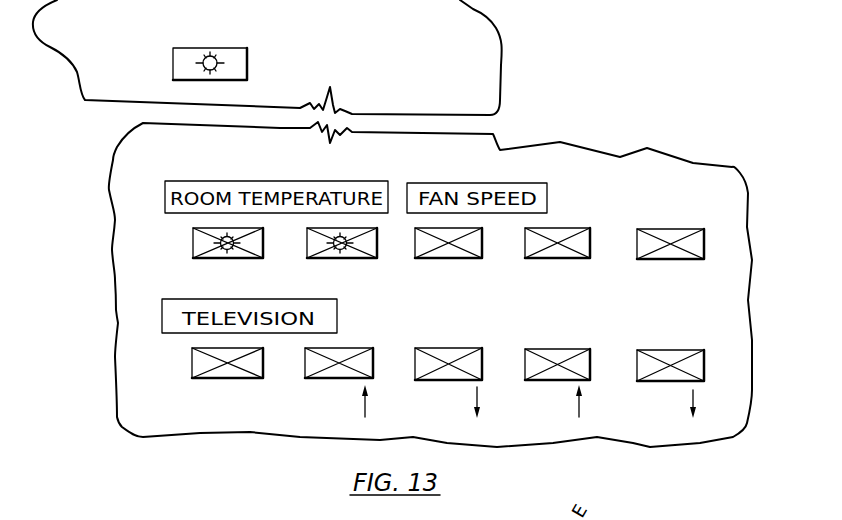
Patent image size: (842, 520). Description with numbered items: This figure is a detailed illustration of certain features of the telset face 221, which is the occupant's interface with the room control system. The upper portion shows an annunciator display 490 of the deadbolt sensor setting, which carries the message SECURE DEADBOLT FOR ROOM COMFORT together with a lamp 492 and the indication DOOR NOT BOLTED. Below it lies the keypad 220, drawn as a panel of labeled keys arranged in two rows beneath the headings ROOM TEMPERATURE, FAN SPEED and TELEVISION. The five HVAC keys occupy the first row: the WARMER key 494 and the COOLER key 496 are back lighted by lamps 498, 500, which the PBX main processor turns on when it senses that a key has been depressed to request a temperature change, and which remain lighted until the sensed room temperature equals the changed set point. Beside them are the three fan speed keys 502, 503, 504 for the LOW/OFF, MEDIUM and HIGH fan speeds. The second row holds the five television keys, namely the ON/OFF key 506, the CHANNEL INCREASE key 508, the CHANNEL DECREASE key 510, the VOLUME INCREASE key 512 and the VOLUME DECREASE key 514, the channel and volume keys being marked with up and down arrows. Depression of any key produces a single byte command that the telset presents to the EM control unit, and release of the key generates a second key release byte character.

The annunciator display 490 is at (506, 62).
The lamp 492 is at (188, 55).
The face 221 is at (639, 64).
The keypad 220 is at (693, 162).
The WARMER key 494 is at (193, 240).
The COOLER key 496 is at (307, 242).
The lamp 498 is at (205, 250).
The lamp 500 is at (350, 243).
The fan speed key 502 is at (482, 242).
The fan speed key 503 is at (577, 229).
The fan speed key 504 is at (676, 230).
The ON/OFF key 506 is at (192, 363).
The CHANNEL INCREASE key 508 is at (305, 371).
The CHANNEL DECREASE key 510 is at (415, 368).
The VOLUME INCREASE key 512 is at (525, 362).
The VOLUME DECREASE key 514 is at (637, 365).